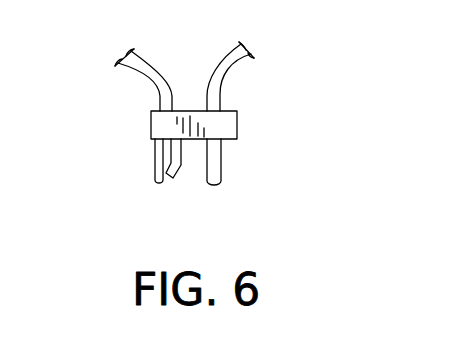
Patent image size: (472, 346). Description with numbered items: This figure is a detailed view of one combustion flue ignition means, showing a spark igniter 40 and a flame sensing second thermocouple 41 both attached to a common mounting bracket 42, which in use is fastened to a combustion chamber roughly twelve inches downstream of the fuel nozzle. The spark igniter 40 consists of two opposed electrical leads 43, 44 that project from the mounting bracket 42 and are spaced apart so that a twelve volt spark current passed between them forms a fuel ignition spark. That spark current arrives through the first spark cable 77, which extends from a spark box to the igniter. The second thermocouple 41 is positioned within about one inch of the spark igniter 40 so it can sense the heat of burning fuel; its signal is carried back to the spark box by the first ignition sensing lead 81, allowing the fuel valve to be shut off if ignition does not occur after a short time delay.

The spark igniter 40 is at (165, 198).
The second temperature sensing thermocouple 41 is at (221, 168).
The mounting bracket 42 is at (237, 117).
The electrical lead 43 is at (155, 163).
The electrical lead 44 is at (179, 175).
The first spark cable 77 is at (155, 69).
The first ignition sensing lead 81 is at (226, 74).